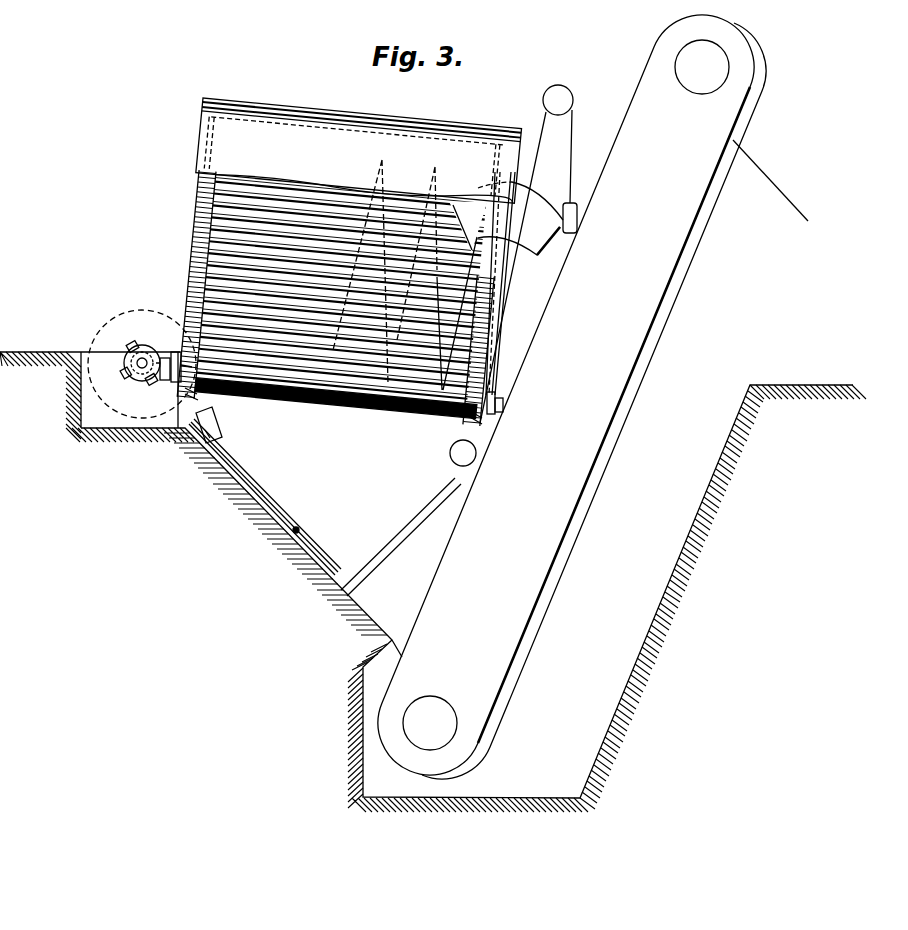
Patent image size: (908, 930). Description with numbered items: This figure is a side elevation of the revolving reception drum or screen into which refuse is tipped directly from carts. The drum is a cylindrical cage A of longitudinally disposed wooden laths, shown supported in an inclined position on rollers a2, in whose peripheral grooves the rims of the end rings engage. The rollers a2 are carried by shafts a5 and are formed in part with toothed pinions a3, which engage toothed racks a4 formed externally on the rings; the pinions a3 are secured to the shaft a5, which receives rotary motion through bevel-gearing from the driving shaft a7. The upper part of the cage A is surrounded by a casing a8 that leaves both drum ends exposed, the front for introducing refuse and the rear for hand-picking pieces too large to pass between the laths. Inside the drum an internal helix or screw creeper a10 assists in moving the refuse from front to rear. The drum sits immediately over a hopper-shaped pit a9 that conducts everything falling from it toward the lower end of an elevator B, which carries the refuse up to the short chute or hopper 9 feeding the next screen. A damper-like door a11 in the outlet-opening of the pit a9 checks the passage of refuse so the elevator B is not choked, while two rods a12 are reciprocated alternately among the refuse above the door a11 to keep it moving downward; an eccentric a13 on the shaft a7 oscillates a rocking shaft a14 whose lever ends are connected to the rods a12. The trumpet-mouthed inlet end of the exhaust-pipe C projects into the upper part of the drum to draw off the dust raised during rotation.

The cylindrical cage A is at (342, 281).
The elevator B is at (572, 397).
The exhaust-pipe C is at (527, 254).
The chute or hopper 9 is at (770, 180).
The rollers a2 is at (172, 355).
The toothed pinions a3 is at (200, 392).
The toothed racks a4 is at (207, 240).
The shafts a5 is at (334, 420).
The shaft a7 is at (147, 378).
The casing a8 is at (359, 152).
The pit a9 is at (433, 582).
The internal helix or screw creeper a10 is at (468, 300).
The door a11 is at (442, 522).
The rods a12 is at (332, 570).
The eccentric a13 is at (143, 352).
The rocking shaft a14 is at (222, 437).